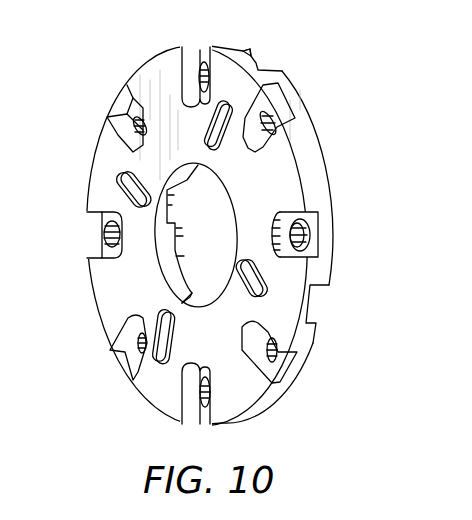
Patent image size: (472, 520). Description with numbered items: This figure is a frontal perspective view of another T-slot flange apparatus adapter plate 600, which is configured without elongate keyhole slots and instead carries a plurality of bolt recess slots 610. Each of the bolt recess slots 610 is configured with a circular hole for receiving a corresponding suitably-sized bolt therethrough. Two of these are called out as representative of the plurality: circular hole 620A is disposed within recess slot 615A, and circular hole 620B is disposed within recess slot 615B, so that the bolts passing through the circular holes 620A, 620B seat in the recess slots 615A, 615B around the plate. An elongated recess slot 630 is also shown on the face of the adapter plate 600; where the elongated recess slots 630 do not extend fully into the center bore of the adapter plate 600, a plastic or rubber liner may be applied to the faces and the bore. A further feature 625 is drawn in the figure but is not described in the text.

The T-slot flange apparatus adapter plate 600 is at (305, 86).
The bolt recess slots 610 is at (297, 213).
The recess slot 615A is at (95, 233).
The recess slot 615B is at (128, 108).
The circular hole 620A is at (113, 242).
The circular hole 620B is at (143, 124).
The angled boss 625 is at (157, 360).
The elongated recess slot 630 is at (258, 60).